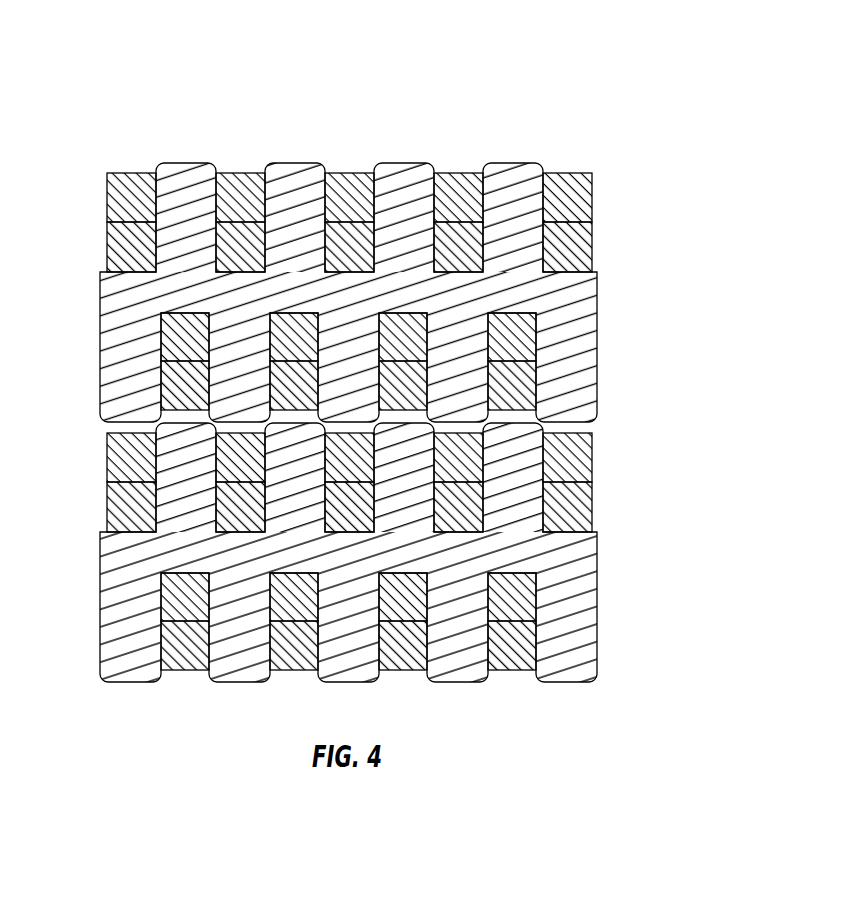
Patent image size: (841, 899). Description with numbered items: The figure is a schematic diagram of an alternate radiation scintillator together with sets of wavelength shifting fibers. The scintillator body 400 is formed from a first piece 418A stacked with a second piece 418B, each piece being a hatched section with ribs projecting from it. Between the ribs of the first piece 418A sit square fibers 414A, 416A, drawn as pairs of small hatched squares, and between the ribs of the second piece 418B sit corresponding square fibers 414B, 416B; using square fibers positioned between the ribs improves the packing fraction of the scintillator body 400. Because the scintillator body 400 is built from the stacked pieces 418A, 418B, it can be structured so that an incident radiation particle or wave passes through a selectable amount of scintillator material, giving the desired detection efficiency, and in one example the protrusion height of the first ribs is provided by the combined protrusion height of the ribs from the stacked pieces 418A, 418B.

The scintillator body 400 is at (643, 69).
The square fiber 414A is at (117, 203).
The square fiber 416A is at (122, 252).
The first piece 418A is at (553, 305).
The square fiber 414B is at (117, 463).
The square fiber 416B is at (122, 512).
The second piece 418B is at (553, 565).